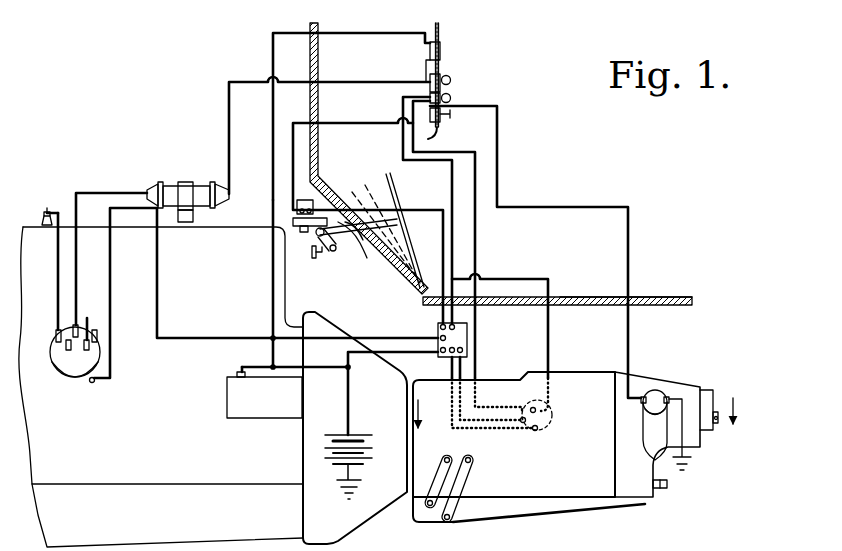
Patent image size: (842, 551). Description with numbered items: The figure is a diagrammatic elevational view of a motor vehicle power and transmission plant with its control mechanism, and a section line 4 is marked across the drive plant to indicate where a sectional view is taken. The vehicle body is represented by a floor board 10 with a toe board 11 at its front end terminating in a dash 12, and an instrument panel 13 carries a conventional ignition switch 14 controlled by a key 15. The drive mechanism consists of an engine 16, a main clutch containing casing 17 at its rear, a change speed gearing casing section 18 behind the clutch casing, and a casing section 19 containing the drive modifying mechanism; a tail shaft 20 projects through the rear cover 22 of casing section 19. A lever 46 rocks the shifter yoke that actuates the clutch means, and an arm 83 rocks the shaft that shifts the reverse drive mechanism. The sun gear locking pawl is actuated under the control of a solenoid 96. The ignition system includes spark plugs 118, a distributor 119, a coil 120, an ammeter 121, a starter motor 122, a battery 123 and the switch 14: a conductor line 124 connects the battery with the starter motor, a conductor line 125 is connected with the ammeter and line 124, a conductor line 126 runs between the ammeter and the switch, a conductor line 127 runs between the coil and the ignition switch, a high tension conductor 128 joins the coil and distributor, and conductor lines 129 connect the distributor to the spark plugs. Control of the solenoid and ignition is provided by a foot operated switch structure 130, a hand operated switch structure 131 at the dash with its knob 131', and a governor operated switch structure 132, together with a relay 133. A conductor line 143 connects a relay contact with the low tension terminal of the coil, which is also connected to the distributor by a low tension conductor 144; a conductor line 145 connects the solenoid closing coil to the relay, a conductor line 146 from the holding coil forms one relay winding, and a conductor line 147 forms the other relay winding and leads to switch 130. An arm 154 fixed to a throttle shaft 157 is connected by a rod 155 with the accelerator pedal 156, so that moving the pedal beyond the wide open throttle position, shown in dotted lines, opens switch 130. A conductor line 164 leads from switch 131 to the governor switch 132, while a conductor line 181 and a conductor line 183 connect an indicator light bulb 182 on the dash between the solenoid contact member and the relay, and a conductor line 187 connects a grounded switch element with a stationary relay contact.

The section line 4 is at (582, 413).
The floor board 10 is at (667, 297).
The toe board 11 is at (396, 281).
The dash 12 is at (318, 61).
The instrument panel 13 is at (441, 31).
The ignition switch 14 is at (441, 71).
The key 15 is at (451, 80).
The engine 16 is at (164, 458).
The main clutch containing casing 17 is at (305, 522).
The change speed gearing casing section 18 is at (524, 484).
The casing section 19 is at (589, 378).
The tail shaft 20 is at (713, 402).
The rear cover 22 is at (666, 384).
The lever 46 is at (471, 483).
The arm 83 is at (441, 479).
The solenoid 96 is at (549, 431).
The spark plugs 118 is at (45, 212).
The distributor 119 is at (78, 390).
The coil 120 is at (170, 181).
The ammeter 121 is at (441, 58).
The starter motor 122 is at (264, 419).
The battery 123 is at (354, 433).
The conductor line 124 is at (318, 370).
The conductor line 125 is at (355, 33).
The conductor line 126 is at (425, 64).
The conductor line 127 is at (229, 112).
The high tension conductor 128 is at (104, 192).
The conductor lines 129 is at (58, 278).
The foot operated switch structure 130 is at (305, 199).
The hand operated switch structure 131 is at (457, 119).
The knob 131' is at (453, 136).
The governor operated switch structure 132 is at (650, 427).
The relay 133 is at (435, 330).
The conductor line 143 is at (189, 341).
The low tension conductor 144 is at (110, 280).
The conductor line 145 is at (549, 319).
The conductor line 146 is at (451, 366).
The conductor line 147 is at (431, 213).
The arm 154 is at (333, 252).
The rod 155 is at (366, 259).
The accelerator pedal 156 is at (395, 196).
The shaft 157 is at (309, 251).
The conductor line 164 is at (549, 214).
The conductor line 181 is at (478, 367).
The indicator light bulb 182 is at (451, 98).
The conductor line 183 is at (403, 146).
The conductor line 187 is at (468, 368).